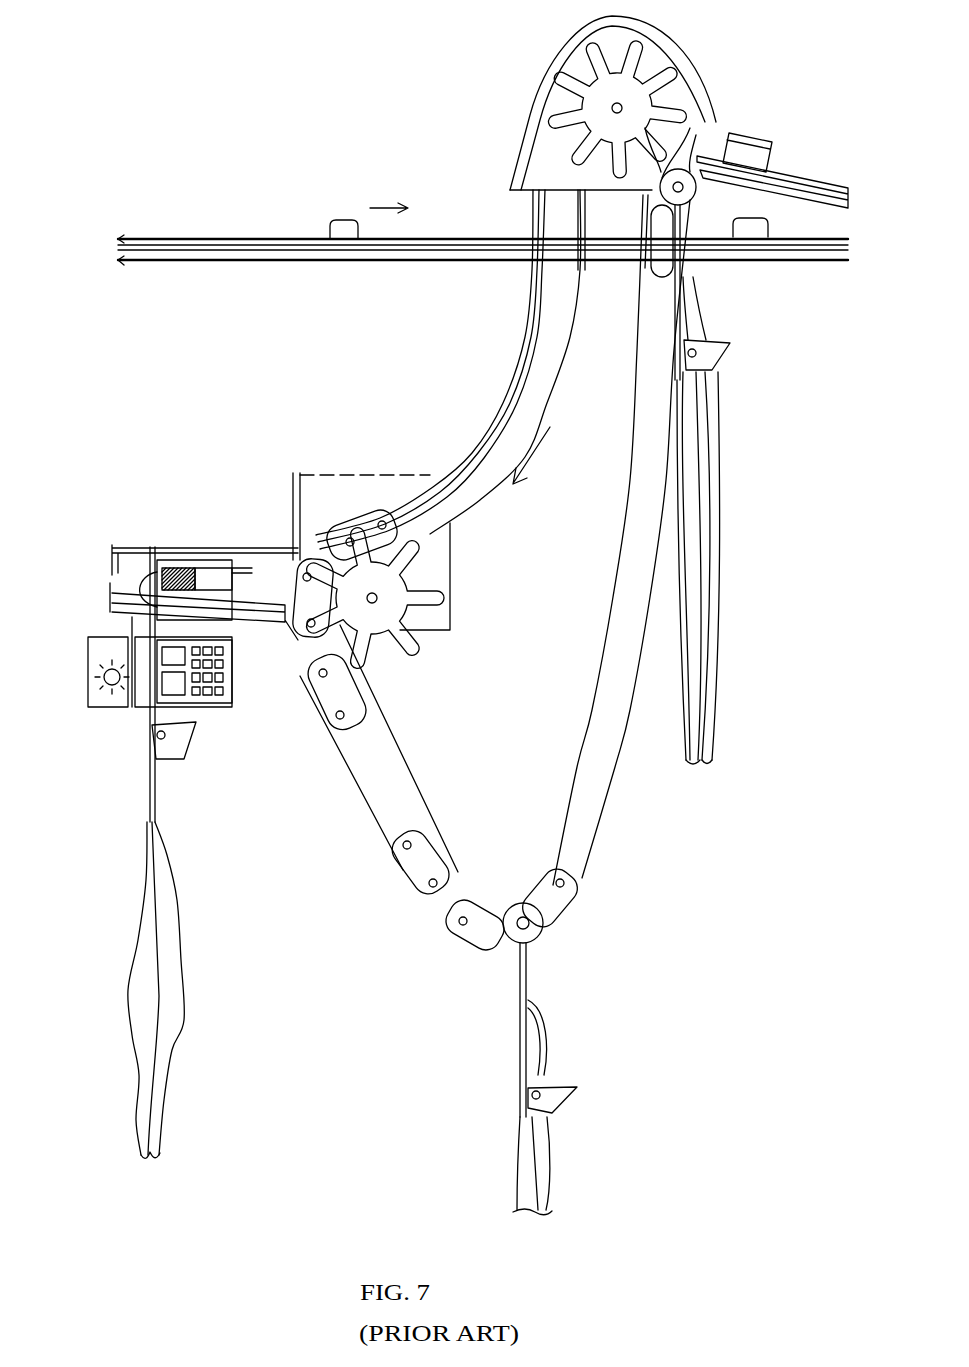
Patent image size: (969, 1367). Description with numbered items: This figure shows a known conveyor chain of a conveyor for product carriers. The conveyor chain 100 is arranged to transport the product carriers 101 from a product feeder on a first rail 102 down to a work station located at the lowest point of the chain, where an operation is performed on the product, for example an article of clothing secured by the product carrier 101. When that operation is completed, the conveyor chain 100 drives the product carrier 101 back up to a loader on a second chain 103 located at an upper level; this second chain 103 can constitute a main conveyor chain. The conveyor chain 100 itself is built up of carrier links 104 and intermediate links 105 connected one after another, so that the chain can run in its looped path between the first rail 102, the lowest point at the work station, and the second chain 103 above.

The conveyor chain 100 is at (662, 810).
The product carrier 101 is at (560, 955).
The first rail 102 is at (265, 656).
The second chain 103 is at (436, 282).
The carrier link 104 is at (468, 880).
The intermediate link 105 is at (432, 858).